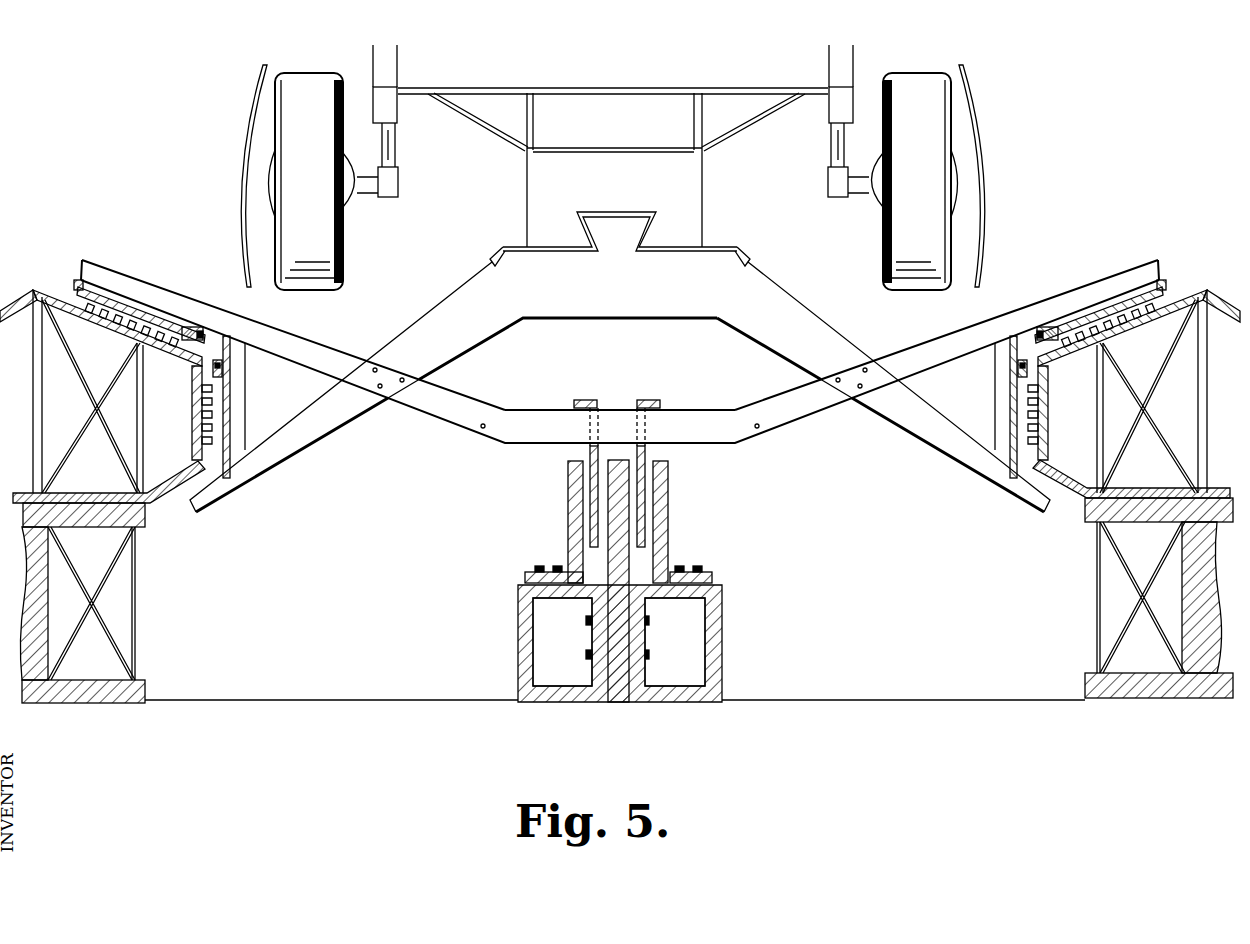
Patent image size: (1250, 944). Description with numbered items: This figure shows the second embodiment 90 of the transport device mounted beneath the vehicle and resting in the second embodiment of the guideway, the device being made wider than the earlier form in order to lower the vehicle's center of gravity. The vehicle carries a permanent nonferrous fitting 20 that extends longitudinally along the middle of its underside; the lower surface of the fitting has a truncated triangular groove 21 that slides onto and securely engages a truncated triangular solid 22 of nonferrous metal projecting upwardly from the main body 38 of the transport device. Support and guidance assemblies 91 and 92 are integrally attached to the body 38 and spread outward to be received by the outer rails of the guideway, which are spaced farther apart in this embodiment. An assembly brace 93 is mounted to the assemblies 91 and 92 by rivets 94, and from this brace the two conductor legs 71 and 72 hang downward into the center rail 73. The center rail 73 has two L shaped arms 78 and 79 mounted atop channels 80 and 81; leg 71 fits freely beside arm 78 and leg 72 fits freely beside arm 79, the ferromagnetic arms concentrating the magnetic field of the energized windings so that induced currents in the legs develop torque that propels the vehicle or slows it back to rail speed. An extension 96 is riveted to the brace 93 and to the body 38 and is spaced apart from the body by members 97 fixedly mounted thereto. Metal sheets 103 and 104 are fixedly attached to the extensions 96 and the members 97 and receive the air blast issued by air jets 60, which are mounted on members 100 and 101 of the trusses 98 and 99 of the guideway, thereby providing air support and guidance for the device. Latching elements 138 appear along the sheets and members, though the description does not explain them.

The fitting 20 is at (694, 202).
The truncated triangular groove 21 is at (613, 212).
The truncated triangular solid 22 is at (627, 238).
The body 38 is at (280, 452).
The air jets 60 is at (70, 286).
The leg 71 is at (590, 448).
The leg 72 is at (643, 488).
The center rail 73 is at (622, 730).
The L shaped arm 78 is at (568, 515).
The L shaped arm 79 is at (668, 515).
The channel 80 is at (524, 628).
The channel 81 is at (718, 637).
The second embodiment transport device 90 is at (795, 285).
The support and guidance assembly 91 is at (345, 433).
The support and guidance assembly 92 is at (871, 433).
The assembly brace 93 is at (483, 424).
The rivets 94 is at (375, 368).
The extension 96 is at (258, 334).
The members 97 is at (240, 405).
The truss 98 is at (158, 568).
The truss 99 is at (1070, 611).
The member 100 is at (70, 314).
The member 101 is at (192, 443).
The metal sheet 103 is at (120, 288).
The metal sheet 104 is at (235, 449).
The latch 138 is at (182, 327).